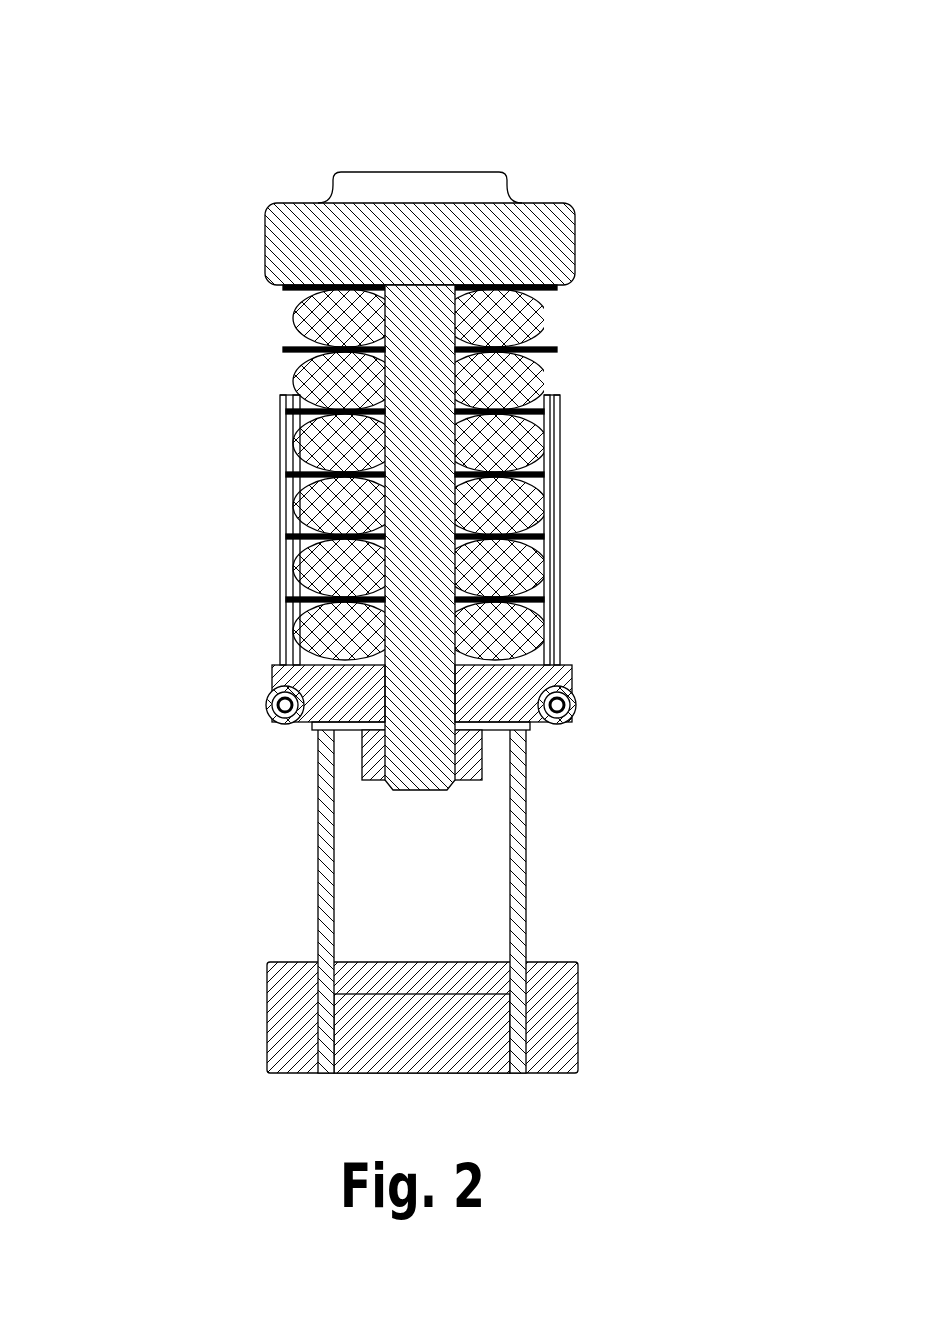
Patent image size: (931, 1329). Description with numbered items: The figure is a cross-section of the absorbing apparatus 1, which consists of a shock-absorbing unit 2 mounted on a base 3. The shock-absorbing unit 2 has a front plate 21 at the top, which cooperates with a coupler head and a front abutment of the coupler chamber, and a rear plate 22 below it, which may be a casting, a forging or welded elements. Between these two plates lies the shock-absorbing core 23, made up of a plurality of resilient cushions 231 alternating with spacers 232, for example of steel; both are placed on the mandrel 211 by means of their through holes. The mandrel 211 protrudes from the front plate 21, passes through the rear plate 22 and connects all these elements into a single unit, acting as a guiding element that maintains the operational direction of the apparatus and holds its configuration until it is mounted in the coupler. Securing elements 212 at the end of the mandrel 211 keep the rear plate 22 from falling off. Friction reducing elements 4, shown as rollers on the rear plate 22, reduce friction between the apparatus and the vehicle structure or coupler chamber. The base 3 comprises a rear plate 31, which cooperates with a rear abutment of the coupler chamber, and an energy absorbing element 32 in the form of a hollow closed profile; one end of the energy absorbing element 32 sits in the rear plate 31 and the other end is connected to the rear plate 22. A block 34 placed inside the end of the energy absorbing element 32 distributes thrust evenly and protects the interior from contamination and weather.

The absorbing apparatus 1 is at (477, 125).
The shock-absorbing unit 2 is at (693, 168).
The base 3 is at (695, 728).
The front plate 21 is at (333, 247).
The mandrel 211 is at (420, 558).
The securing elements 212 is at (377, 755).
The rear plate 22 is at (322, 678).
The shock-absorbing core 23 is at (280, 383).
The resilient cushions 231 is at (320, 315).
The spacers 232 is at (320, 350).
The friction reducing elements 4 is at (273, 715).
The rear plate 31 is at (290, 1032).
The energy absorbing element 32 is at (318, 923).
The block 34 is at (400, 1025).